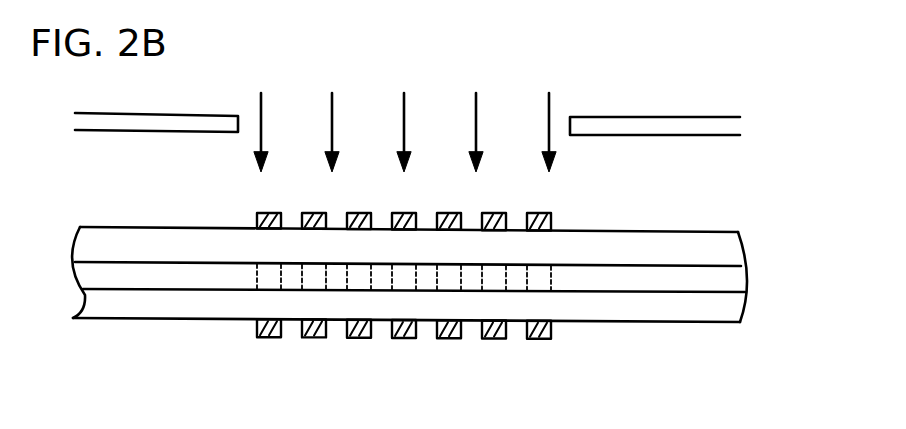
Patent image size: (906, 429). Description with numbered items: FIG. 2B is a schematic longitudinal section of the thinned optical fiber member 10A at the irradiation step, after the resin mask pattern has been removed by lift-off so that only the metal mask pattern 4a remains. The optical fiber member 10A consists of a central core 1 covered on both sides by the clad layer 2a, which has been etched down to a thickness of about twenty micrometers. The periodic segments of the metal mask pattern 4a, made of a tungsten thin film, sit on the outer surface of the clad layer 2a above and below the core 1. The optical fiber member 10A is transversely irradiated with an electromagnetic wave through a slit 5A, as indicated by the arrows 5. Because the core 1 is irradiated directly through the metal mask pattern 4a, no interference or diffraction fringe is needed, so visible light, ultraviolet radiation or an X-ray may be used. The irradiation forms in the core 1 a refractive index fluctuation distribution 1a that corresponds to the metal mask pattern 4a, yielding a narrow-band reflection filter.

The arrows (electromagnetic wave irradiation) 5 is at (551, 108).
The slit 5A is at (672, 125).
The metal mask pattern 4a is at (551, 216).
The clad layer 2a is at (740, 253).
The core 1 is at (740, 285).
The refractive index fluctuation distribution 1a is at (516, 283).
The optical fiber member 10A is at (475, 301).